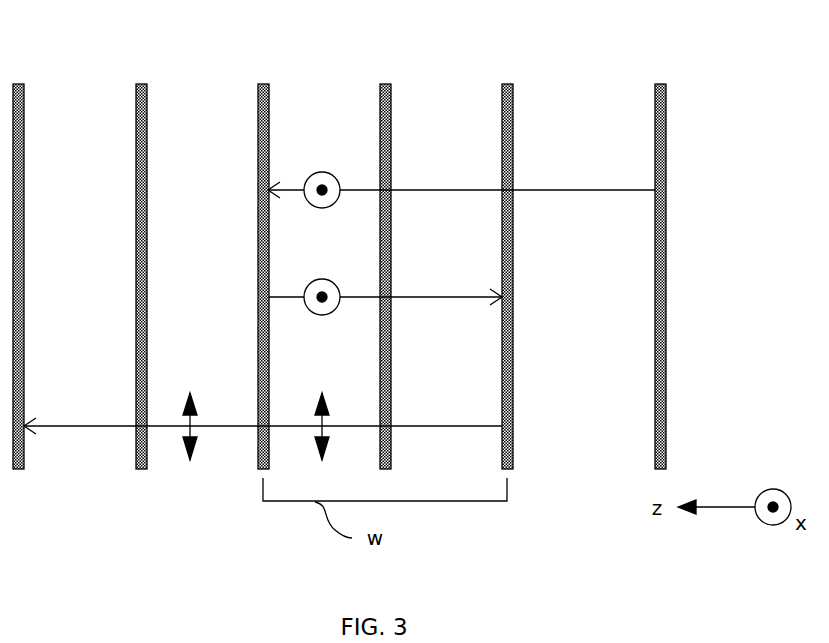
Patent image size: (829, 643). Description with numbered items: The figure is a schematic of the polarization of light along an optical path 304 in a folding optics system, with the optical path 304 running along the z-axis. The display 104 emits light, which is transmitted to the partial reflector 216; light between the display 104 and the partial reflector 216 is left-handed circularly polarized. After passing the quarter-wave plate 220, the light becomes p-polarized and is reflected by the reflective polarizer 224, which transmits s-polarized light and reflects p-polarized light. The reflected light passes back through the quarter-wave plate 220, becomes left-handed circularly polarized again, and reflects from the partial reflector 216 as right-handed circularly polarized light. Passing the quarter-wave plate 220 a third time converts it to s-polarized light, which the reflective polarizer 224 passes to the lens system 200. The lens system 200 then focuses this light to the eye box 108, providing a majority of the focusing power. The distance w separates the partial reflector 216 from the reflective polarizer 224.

The eye box 108 is at (20, 84).
The lens system 200 is at (143, 84).
The reflective polarizer 224 is at (265, 84).
The quarter-wave plate 220 is at (387, 84).
The partial reflector 216 is at (509, 84).
The display 104 is at (662, 84).
The optical path 304 is at (478, 426).